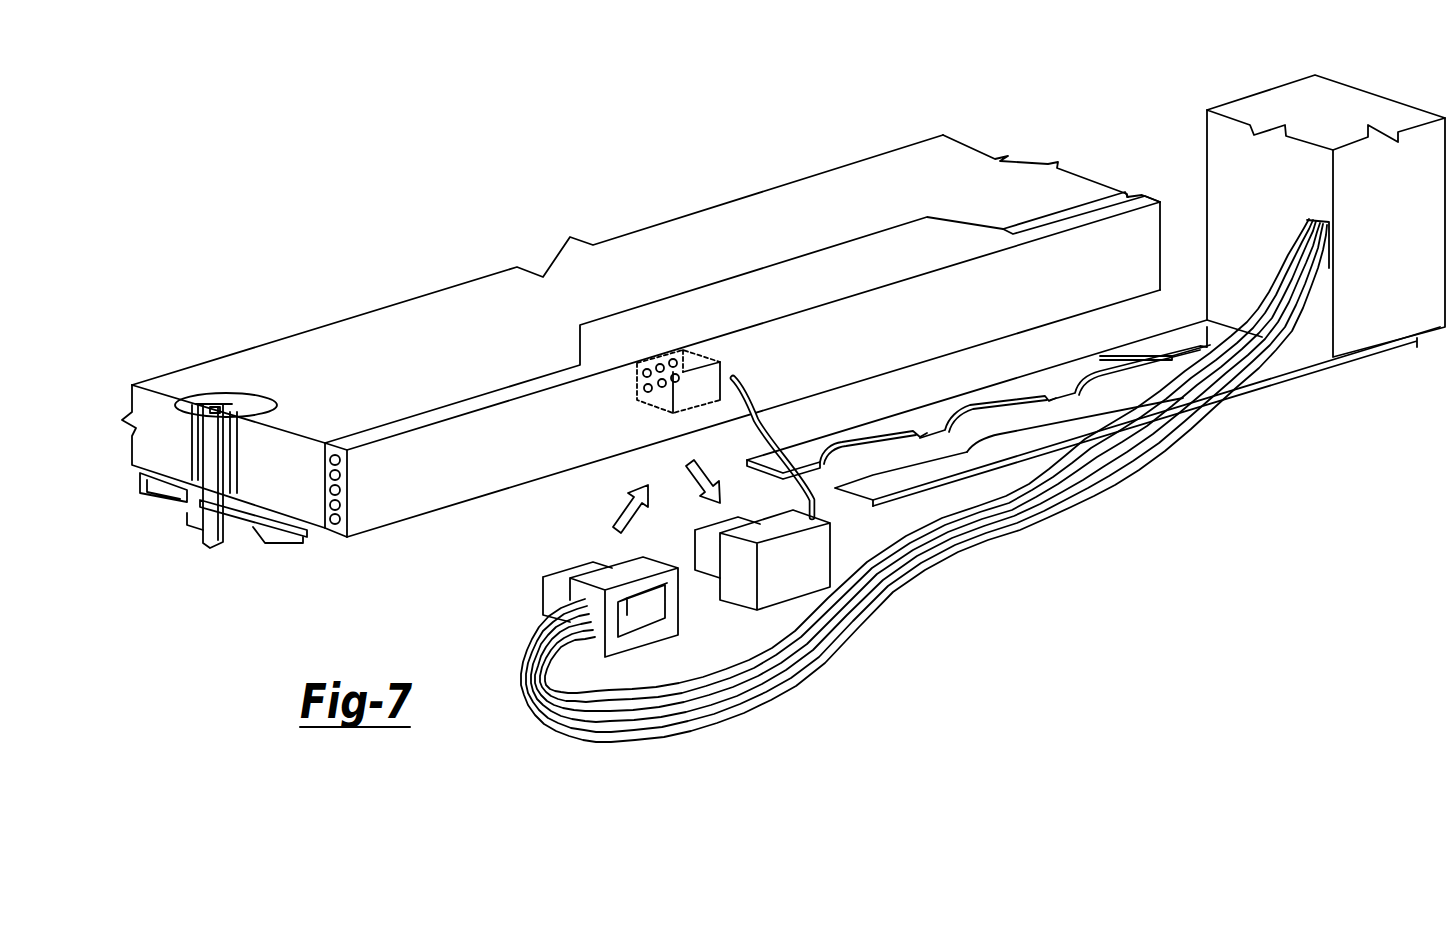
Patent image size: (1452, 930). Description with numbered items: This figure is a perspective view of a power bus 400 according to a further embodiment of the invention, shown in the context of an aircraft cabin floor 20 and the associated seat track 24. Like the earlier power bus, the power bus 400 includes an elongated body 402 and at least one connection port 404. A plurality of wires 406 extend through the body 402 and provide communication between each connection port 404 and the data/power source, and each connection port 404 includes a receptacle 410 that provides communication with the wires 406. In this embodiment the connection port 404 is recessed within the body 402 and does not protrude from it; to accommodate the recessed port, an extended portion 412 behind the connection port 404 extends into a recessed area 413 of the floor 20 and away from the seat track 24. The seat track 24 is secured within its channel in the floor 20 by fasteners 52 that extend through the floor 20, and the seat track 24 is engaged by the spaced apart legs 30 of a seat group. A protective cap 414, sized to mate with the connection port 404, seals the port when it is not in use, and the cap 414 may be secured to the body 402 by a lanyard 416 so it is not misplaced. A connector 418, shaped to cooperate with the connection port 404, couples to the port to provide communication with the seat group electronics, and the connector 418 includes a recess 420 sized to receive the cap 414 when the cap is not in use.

The floor 20 is at (347, 345).
The seat track 24 is at (895, 514).
The legs 30 is at (1220, 145).
The fasteners 52 is at (216, 402).
The power bus 400 is at (422, 534).
The elongated body 402 is at (488, 482).
The connection port 404 is at (718, 374).
The wires 406 is at (326, 475).
The receptacle 410 is at (678, 379).
The extended portion 412 is at (887, 272).
The recessed area 413 is at (657, 301).
The protective cap 414 is at (738, 585).
The lanyard 416 is at (748, 398).
The connector 418 is at (615, 572).
The recess 420 is at (647, 606).